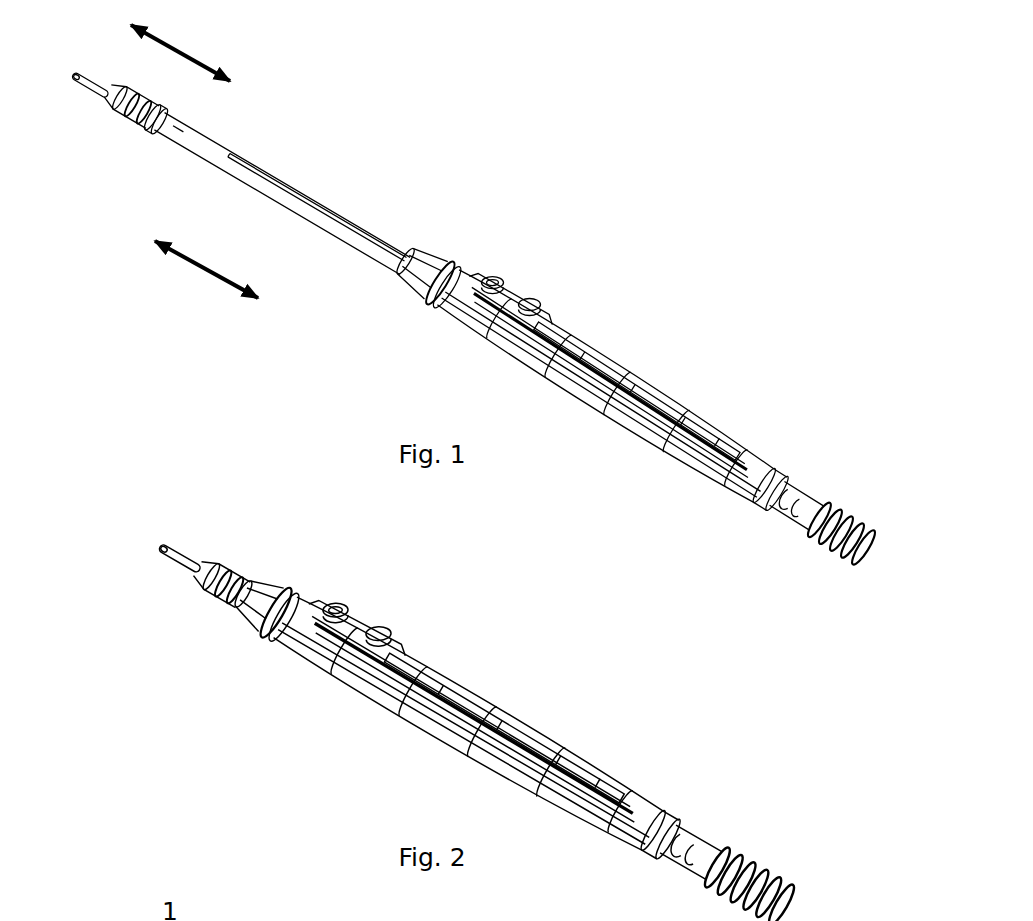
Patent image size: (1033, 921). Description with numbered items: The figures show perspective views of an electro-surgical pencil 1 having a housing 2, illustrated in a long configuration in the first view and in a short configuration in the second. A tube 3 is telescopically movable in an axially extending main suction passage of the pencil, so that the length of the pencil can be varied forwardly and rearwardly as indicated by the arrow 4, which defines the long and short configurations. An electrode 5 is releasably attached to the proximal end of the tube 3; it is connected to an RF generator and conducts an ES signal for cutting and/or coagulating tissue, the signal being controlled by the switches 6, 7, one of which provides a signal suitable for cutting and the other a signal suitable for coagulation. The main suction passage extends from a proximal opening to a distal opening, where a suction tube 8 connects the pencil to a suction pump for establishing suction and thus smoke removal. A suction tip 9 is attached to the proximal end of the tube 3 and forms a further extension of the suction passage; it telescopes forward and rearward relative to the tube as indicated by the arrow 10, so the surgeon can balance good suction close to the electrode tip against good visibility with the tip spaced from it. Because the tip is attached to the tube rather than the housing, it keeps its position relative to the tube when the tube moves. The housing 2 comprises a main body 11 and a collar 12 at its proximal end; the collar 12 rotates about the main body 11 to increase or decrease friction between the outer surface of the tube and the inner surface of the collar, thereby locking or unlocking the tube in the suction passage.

In FIG. 1, the electro-surgical pencil 1 is at (624, 150).
In FIG. 2, the electro-surgical pencil 1 is at (566, 590).
In FIG. 1, the housing 2 is at (676, 365).
In FIG. 2, the housing 2 is at (616, 747).
In FIG. 1, the tube 3 is at (350, 208).
In FIG. 1, the arrow 4 is at (206, 278).
In FIG. 1, the electrode 5 is at (86, 87).
In FIG. 2, the electrode 5 is at (176, 545).
In FIG. 1, the switch 6 is at (538, 301).
In FIG. 2, the switch 6 is at (384, 636).
In FIG. 1, the switch 7 is at (496, 279).
In FIG. 2, the switch 7 is at (344, 609).
In FIG. 1, the suction tube 8 is at (845, 549).
In FIG. 2, the suction tube 8 is at (768, 858).
In FIG. 1, the suction tip 9 is at (137, 123).
In FIG. 2, the suction tip 9 is at (198, 579).
In FIG. 1, the arrow 10 is at (180, 49).
In FIG. 1, the main body 11 is at (613, 347).
In FIG. 2, the main body 11 is at (533, 739).
In FIG. 1, the collar 12 is at (393, 283).
In FIG. 2, the collar 12 is at (247, 614).